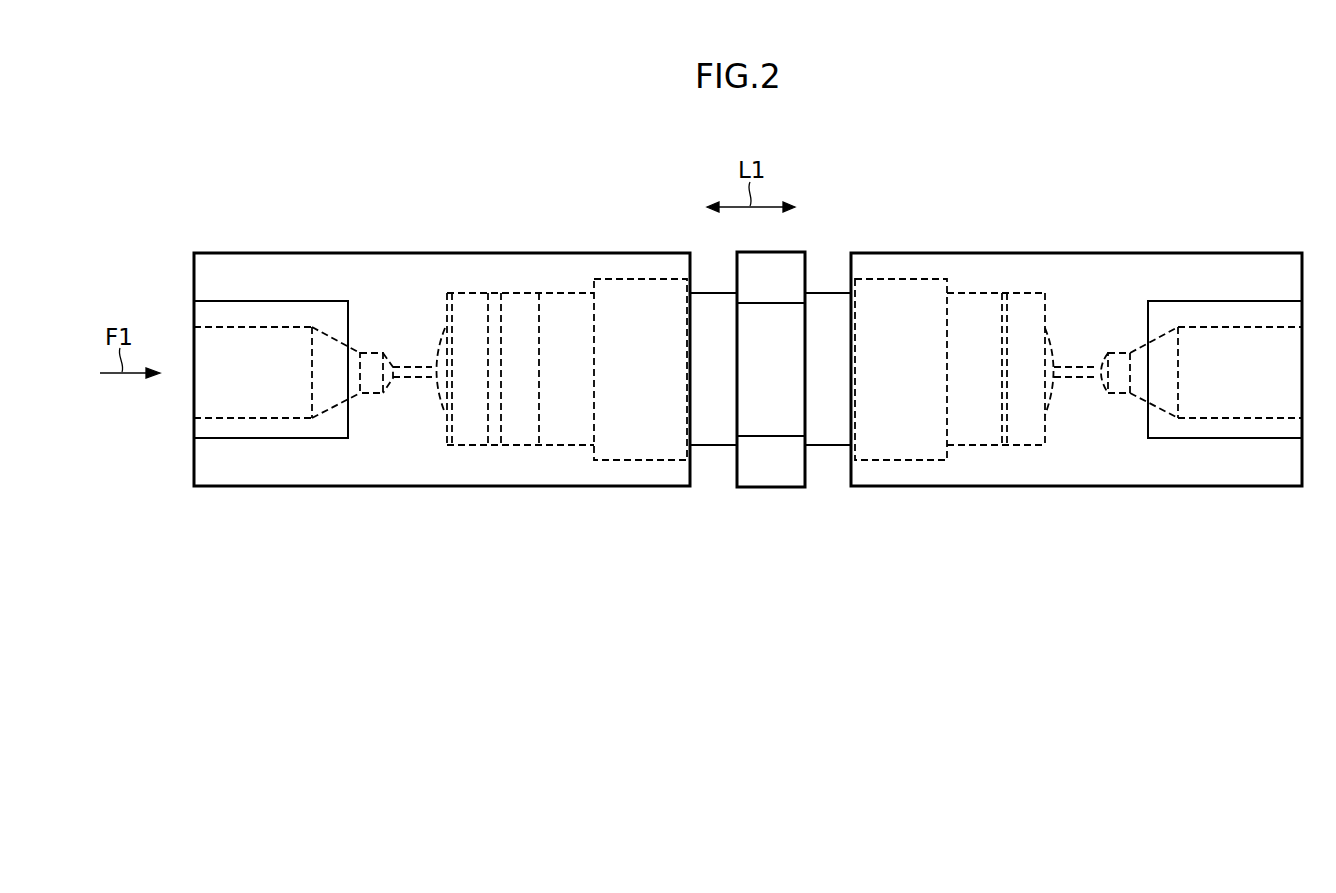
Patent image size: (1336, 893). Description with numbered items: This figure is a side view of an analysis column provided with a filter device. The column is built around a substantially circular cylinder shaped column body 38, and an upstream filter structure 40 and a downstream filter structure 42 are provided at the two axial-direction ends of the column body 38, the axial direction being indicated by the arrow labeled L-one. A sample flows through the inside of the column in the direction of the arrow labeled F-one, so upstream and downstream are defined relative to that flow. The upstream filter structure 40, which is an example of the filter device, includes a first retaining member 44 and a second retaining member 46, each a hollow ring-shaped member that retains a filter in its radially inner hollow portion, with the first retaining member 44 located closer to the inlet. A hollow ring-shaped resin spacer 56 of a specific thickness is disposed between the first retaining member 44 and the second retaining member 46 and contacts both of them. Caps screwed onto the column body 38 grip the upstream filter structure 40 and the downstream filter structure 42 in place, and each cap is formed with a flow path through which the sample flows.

The column body 38 is at (830, 459).
The upstream filter structure 40 is at (498, 455).
The downstream filter structure 42 is at (1032, 455).
The first retaining member 44 is at (472, 446).
The second retaining member 46 is at (557, 446).
The spacer 56 is at (520, 446).